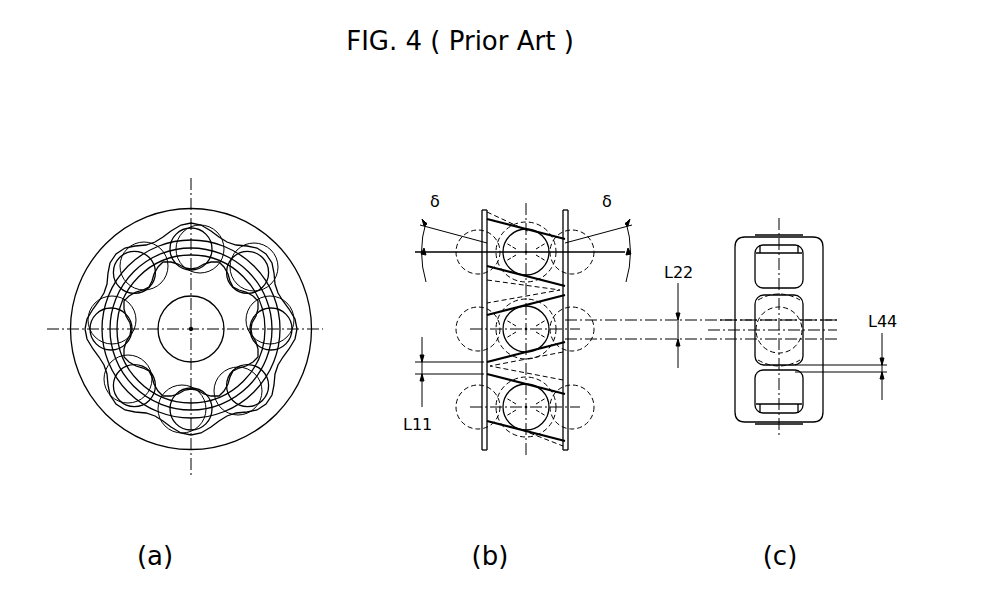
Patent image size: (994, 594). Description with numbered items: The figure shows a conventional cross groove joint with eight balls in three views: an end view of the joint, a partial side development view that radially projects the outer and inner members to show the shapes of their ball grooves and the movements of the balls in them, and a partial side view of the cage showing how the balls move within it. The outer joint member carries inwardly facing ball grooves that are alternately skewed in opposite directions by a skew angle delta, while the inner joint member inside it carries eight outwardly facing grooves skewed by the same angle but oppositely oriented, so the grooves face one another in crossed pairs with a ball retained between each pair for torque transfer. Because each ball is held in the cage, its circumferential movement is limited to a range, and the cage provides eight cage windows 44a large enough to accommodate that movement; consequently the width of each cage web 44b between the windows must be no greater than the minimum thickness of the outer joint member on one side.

The cage windows 44a is at (787, 393).
The cage web 44b is at (788, 288).